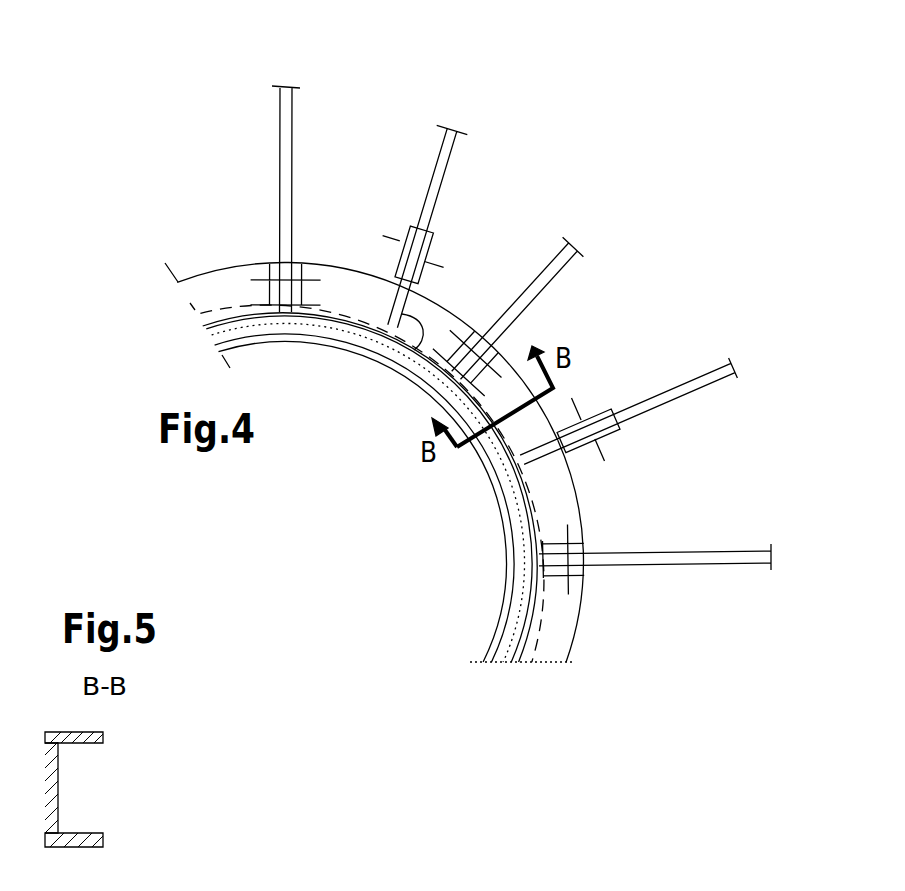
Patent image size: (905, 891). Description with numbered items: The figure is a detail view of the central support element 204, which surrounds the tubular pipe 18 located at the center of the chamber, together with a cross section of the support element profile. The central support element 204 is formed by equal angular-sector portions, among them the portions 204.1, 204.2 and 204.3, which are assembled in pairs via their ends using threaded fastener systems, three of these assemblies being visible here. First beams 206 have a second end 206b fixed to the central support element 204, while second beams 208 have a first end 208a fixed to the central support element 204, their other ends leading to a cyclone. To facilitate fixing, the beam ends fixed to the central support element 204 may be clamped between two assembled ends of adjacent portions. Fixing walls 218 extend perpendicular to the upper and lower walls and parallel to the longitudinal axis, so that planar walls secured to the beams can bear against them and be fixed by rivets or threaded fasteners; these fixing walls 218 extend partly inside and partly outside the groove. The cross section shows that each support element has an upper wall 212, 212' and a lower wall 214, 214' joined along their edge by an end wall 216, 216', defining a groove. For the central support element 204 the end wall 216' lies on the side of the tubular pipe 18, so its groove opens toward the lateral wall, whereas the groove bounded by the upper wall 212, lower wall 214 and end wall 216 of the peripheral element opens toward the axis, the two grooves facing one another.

In FIG. 4, the tubular pipe 18 is at (500, 618).
In FIG. 4, the central support element 204 is at (582, 616).
In FIG. 4, the first portion of the central support element 204.1 is at (210, 288).
In FIG. 4, the second portion of the central support element 204.2 is at (515, 485).
In FIG. 4, the third portion of the central support element 204.3 is at (555, 640).
In FIG. 4, the first beam 206 is at (440, 187).
In FIG. 4, the second end of the first beam 206b is at (405, 248).
In FIG. 4, the second beam 208 is at (293, 122).
In FIG. 4, the first end of the second beam 208a is at (275, 268).
In FIG. 5, the upper wall of the peripheral support element 212 is at (141, 751).
In FIG. 4, the upper wall of the central support element 212' is at (454, 487).
In FIG. 5, the upper wall of the central support element 212' is at (76, 737).
In FIG. 5, the lower wall of the peripheral support element 214 is at (150, 832).
In FIG. 5, the lower wall of the central support element 214' is at (76, 840).
In FIG. 5, the end wall of the peripheral support element 216 is at (156, 788).
In FIG. 5, the end wall of the central support element 216' is at (51, 787).
In FIG. 4, the fixing wall 218 is at (440, 362).